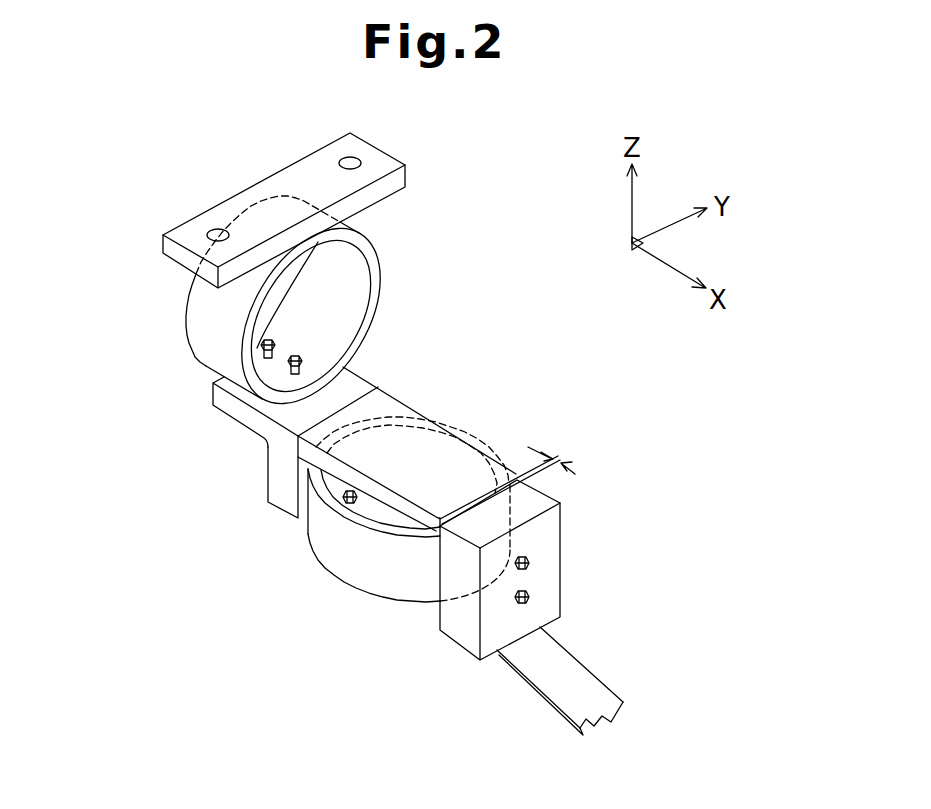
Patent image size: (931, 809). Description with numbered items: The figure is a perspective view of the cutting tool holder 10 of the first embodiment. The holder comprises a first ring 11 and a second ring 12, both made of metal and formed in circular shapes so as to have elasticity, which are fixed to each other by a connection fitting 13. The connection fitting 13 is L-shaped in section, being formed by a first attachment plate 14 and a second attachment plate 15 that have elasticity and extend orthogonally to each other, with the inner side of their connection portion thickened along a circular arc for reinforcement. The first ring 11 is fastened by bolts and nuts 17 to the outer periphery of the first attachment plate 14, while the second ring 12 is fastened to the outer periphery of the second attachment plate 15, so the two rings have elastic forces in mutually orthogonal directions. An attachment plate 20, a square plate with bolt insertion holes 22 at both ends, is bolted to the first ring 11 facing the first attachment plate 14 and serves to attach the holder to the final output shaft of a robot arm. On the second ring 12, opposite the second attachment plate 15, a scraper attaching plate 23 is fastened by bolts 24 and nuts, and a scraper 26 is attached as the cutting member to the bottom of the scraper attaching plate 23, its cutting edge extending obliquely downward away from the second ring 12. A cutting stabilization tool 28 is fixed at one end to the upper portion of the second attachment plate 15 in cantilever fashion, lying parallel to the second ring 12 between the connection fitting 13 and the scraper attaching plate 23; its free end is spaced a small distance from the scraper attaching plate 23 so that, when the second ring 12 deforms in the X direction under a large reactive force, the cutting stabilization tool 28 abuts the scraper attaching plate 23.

The cutting tool holder 10 is at (134, 306).
The first ring 11 is at (378, 278).
The second ring 12 is at (343, 575).
The connection fitting 13 is at (362, 380).
The first attachment plate 14 is at (228, 410).
The second attachment plate 15 is at (267, 483).
The nuts 17 is at (304, 355).
The attachment plate 20 is at (382, 192).
The bolt insertion holes 22 is at (350, 157).
The scraper attaching plate 23 is at (563, 602).
The bolts 24 is at (531, 596).
The scraper 26 is at (598, 690).
The cutting stabilization tool 28 is at (403, 408).